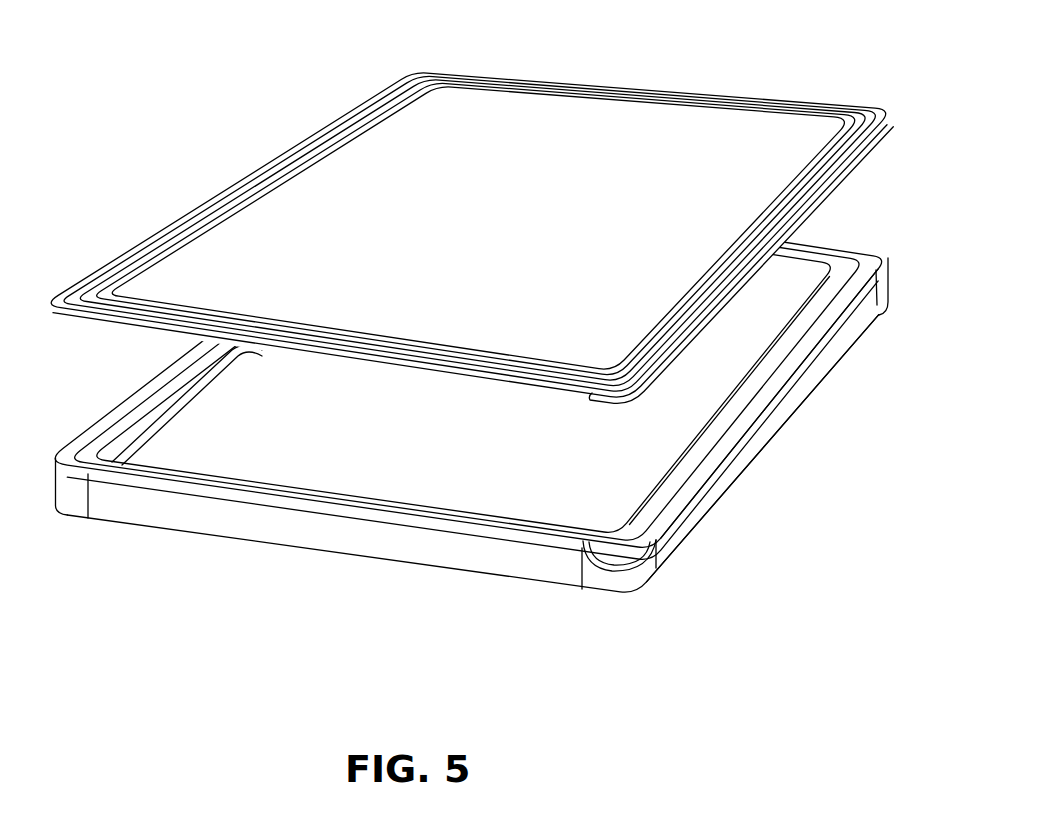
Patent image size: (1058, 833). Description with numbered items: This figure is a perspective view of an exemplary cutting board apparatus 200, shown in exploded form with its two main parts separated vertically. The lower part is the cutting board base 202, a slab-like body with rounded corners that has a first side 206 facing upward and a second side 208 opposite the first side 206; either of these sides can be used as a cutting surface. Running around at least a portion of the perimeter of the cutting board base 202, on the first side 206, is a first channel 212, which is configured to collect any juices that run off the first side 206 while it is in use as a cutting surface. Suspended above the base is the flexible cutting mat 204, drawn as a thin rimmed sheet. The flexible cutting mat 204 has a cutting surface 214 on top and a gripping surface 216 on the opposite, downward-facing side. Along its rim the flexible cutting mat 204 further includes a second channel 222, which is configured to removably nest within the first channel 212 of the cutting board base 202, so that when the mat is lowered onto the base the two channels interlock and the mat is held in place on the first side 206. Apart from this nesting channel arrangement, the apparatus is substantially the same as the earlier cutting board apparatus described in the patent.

The cutting board apparatus 200 is at (158, 48).
The cutting board base 202 is at (310, 550).
The flexible cutting mat 204 is at (140, 197).
The first side 206 is at (736, 320).
The second side 208 is at (762, 458).
The first channel 212 is at (640, 505).
The cutting surface 214 is at (598, 147).
The gripping surface 216 is at (213, 383).
The second channel 222 is at (857, 118).